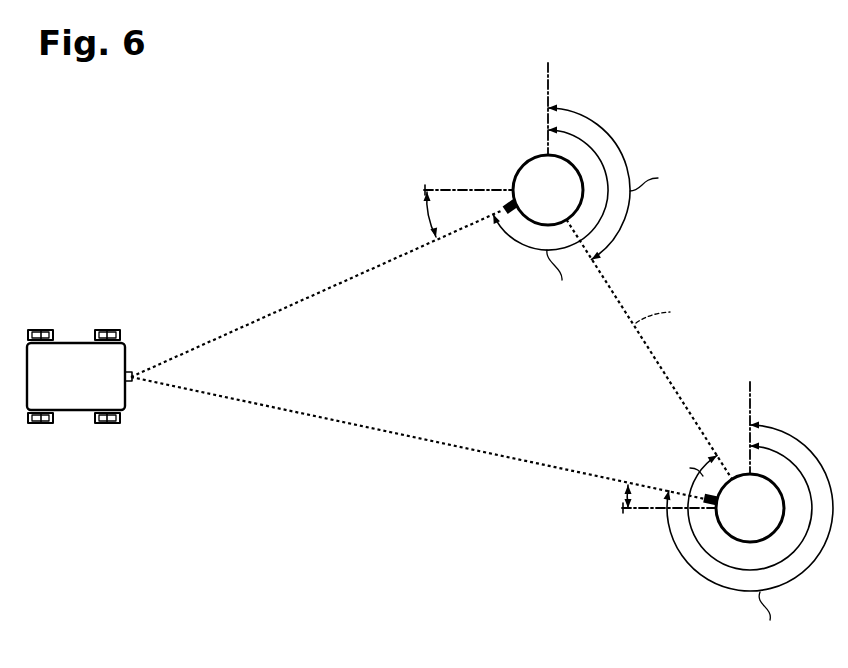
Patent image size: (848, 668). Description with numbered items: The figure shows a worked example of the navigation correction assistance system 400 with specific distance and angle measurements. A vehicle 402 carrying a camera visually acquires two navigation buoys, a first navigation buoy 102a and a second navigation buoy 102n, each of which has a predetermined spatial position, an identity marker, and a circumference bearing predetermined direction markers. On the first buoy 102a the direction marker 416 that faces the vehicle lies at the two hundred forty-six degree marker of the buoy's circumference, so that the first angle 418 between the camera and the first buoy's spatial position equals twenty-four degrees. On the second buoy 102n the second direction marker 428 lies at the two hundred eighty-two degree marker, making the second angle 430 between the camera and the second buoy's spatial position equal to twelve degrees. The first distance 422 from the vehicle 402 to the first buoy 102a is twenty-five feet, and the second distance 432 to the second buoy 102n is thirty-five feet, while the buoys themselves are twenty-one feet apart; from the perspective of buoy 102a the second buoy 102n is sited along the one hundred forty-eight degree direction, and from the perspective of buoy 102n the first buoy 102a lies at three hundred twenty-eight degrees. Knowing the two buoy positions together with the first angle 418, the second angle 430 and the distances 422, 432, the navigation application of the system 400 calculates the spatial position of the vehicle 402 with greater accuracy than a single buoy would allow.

The system 400 is at (768, 50).
The vehicle 402 is at (56, 388).
The first navigation buoy 102a is at (574, 201).
The second navigation buoy 102n is at (724, 519).
The direction marker 416 is at (507, 202).
The first angle 418 is at (427, 216).
The first distance 422 is at (288, 305).
The second direction marker 428 is at (710, 496).
The second angle 430 is at (622, 503).
The second distance 432 is at (338, 422).